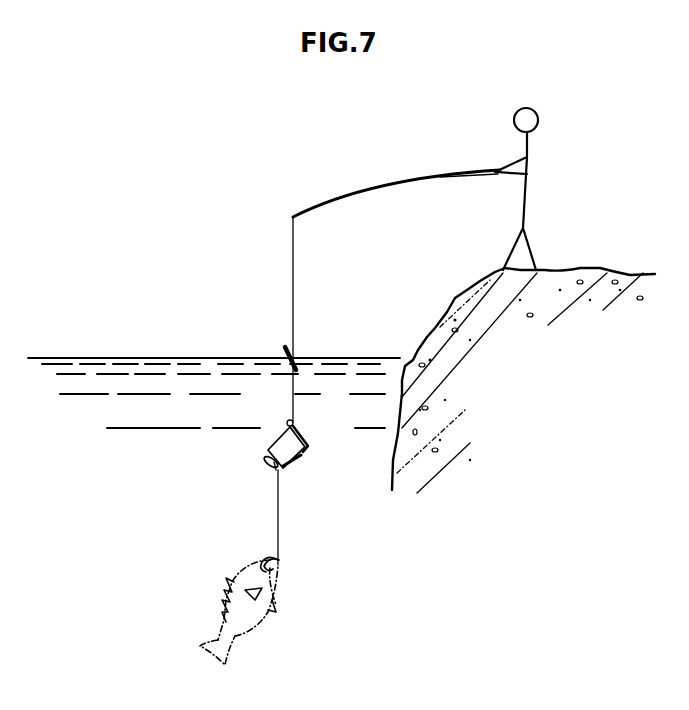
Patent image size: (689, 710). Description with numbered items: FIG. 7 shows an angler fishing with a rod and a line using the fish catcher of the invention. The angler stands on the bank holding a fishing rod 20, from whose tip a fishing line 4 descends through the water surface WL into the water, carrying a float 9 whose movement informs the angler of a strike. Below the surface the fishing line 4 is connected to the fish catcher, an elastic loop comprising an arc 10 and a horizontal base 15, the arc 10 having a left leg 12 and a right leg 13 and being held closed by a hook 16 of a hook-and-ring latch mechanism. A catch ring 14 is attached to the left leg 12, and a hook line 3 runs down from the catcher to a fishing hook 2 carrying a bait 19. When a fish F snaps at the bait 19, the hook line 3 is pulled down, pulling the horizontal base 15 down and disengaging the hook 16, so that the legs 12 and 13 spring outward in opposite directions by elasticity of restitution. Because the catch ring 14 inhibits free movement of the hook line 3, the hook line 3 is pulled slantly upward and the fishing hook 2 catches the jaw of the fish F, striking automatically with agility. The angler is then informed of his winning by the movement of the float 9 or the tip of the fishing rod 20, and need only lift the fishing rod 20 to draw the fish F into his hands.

The fishing hook 2 is at (258, 565).
The hook line 3 is at (280, 507).
The fishing line 4 is at (293, 273).
The float 9 is at (283, 346).
The arc 10 is at (264, 451).
The left leg 12 is at (270, 447).
The right leg 13 is at (304, 444).
The catch ring 14 is at (270, 466).
The horizontal base 15 is at (297, 462).
The hook 16 is at (265, 459).
The bait 19 is at (280, 566).
The fishing rod 20 is at (362, 190).
The water line WL is at (350, 358).
The fish F is at (285, 590).